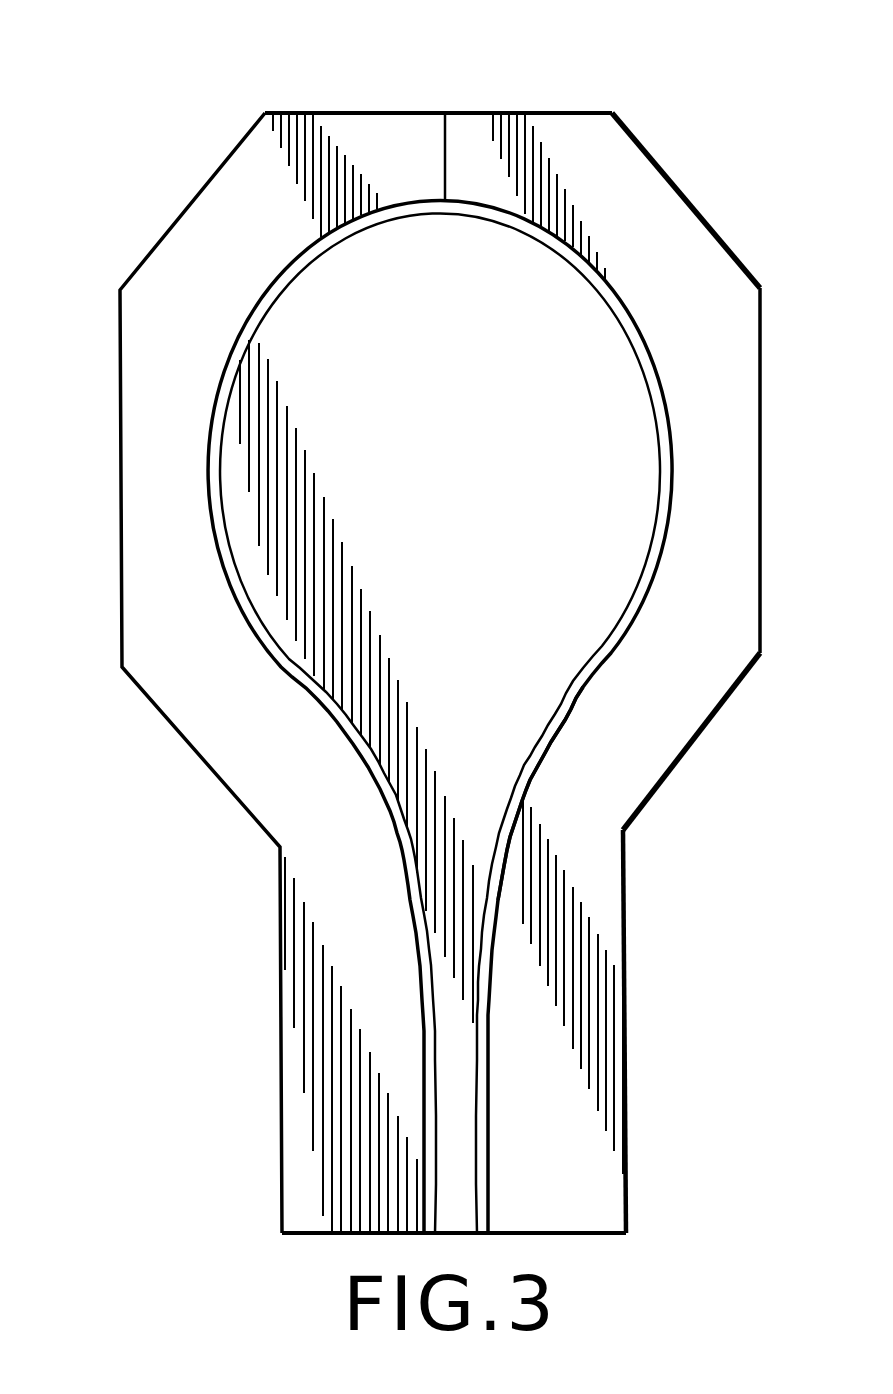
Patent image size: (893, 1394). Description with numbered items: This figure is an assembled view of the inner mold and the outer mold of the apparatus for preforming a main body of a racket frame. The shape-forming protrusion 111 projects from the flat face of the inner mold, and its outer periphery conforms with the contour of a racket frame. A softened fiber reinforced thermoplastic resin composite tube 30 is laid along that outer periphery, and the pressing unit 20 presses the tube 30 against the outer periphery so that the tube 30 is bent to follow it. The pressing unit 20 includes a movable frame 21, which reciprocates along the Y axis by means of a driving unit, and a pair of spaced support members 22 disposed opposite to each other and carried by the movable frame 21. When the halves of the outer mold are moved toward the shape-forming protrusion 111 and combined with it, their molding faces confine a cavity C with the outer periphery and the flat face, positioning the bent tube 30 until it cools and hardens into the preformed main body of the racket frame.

The pressing unit 20 is at (512, 100).
The movable frame 21 is at (720, 265).
The support members 22 is at (147, 348).
The softened fiber reinforced thermoplastic resin composite tube 30 is at (684, 461).
The shape-forming protrusion 111 is at (590, 638).
The cavity C is at (568, 710).